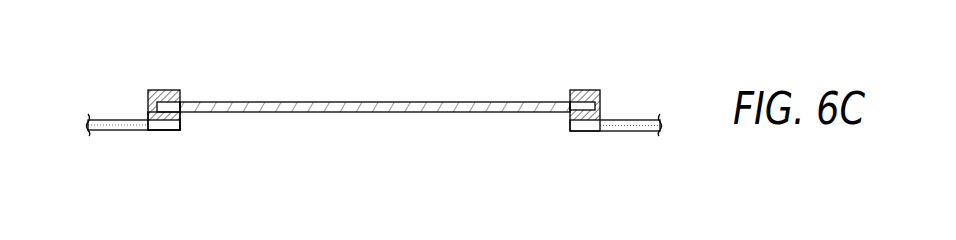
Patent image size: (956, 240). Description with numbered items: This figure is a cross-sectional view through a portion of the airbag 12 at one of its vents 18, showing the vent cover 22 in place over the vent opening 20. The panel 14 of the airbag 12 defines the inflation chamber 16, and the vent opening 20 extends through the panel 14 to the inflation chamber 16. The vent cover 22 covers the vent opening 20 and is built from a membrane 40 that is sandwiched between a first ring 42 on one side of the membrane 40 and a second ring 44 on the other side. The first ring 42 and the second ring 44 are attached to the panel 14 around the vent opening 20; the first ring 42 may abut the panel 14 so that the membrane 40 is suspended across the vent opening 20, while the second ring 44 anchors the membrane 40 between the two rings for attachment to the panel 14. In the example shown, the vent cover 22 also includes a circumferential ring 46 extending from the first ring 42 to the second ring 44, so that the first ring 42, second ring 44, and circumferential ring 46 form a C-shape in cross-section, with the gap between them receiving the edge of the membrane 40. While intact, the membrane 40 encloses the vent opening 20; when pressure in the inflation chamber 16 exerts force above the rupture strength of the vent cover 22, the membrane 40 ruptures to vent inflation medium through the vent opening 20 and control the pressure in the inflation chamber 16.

The airbag 12 is at (93, 160).
The panel 14 is at (135, 131).
The inflation chamber 16 is at (545, 148).
The vent 18 is at (603, 62).
The vent opening 20 is at (262, 133).
The vent cover 22 is at (610, 98).
The membrane 40 is at (305, 102).
The first ring 42 is at (163, 131).
The second ring 44 is at (162, 90).
The circumferential ring 46 is at (158, 107).